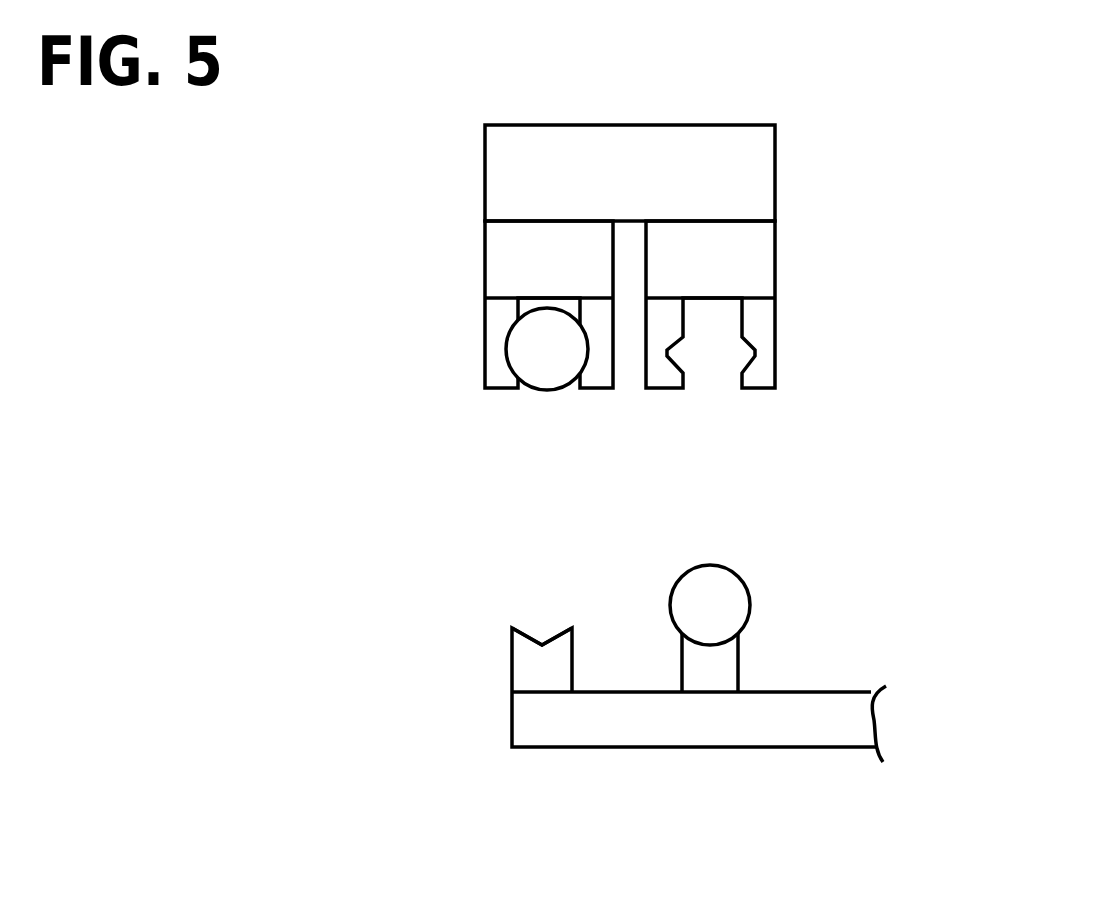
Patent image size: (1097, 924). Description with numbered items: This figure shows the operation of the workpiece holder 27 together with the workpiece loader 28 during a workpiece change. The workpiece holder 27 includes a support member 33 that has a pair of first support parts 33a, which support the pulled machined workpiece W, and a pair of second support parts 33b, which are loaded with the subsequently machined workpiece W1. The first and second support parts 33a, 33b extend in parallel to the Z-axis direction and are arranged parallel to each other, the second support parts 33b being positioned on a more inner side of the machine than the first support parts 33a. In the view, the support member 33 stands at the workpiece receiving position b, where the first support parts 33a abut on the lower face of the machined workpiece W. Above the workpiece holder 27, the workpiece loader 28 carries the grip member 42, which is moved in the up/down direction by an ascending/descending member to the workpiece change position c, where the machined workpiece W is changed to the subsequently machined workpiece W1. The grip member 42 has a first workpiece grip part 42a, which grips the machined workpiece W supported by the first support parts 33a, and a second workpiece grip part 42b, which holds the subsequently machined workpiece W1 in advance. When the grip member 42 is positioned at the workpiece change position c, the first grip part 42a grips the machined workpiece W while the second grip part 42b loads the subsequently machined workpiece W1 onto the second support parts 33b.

The workpiece loader 28 is at (432, 200).
The grip member 42 is at (631, 328).
The first workpiece grip part 42a is at (775, 360).
The second workpiece grip part 42b is at (485, 343).
The subsequently machined workpiece W1 is at (547, 390).
The workpiece change position c is at (727, 495).
The workpiece receiving position b is at (547, 615).
The workpiece holder 27 is at (607, 708).
The support member 33 is at (822, 749).
The first support part 33a is at (738, 667).
The second support part 33b is at (510, 652).
The machined workpiece W is at (753, 598).